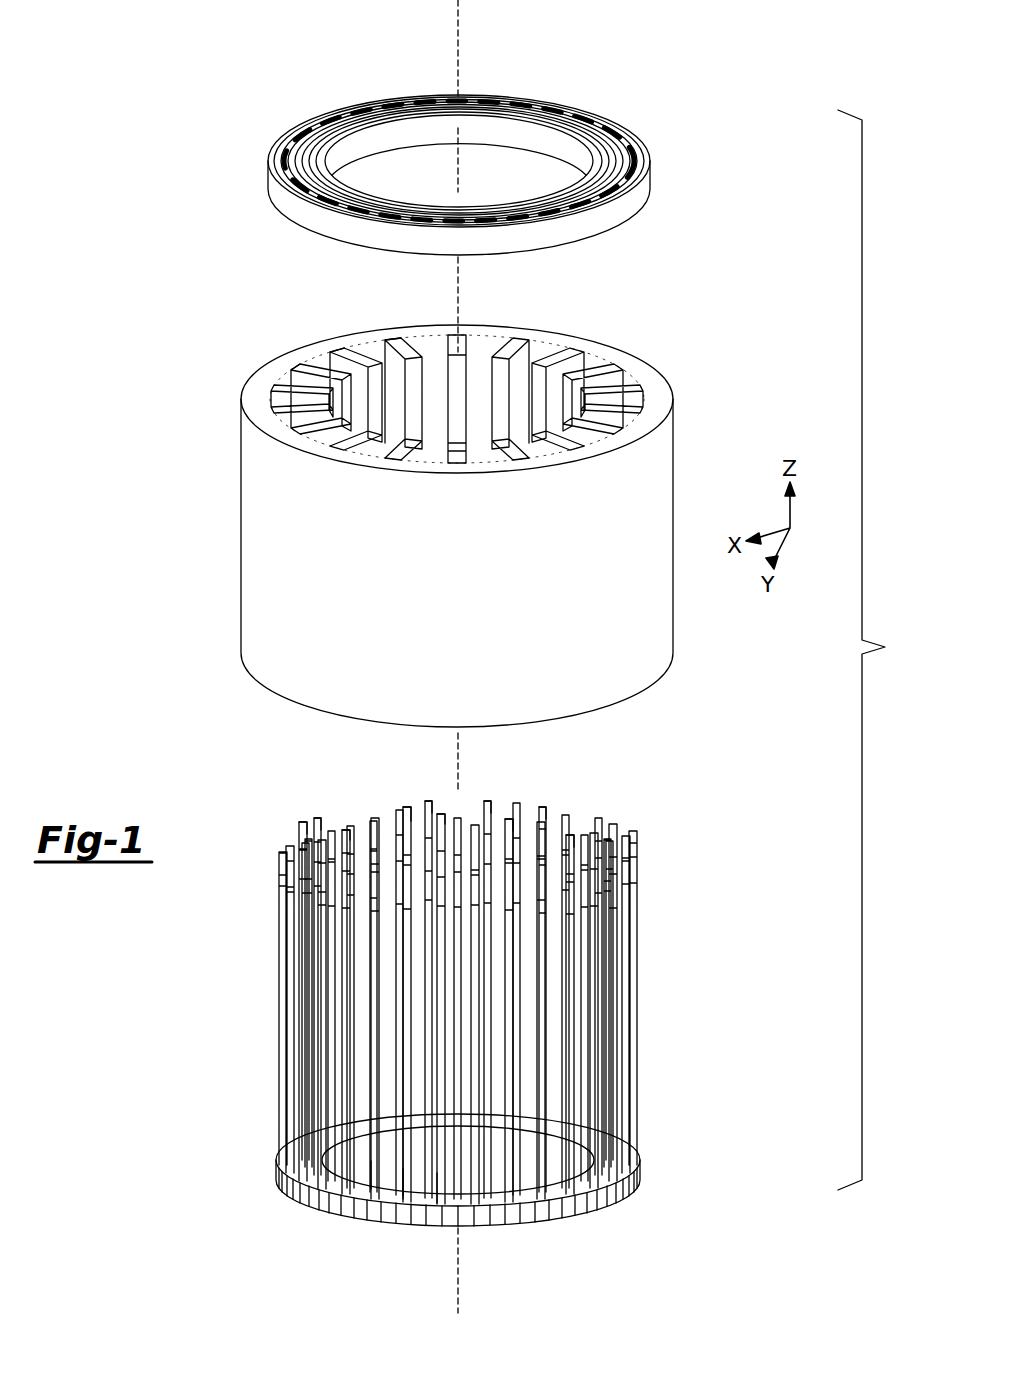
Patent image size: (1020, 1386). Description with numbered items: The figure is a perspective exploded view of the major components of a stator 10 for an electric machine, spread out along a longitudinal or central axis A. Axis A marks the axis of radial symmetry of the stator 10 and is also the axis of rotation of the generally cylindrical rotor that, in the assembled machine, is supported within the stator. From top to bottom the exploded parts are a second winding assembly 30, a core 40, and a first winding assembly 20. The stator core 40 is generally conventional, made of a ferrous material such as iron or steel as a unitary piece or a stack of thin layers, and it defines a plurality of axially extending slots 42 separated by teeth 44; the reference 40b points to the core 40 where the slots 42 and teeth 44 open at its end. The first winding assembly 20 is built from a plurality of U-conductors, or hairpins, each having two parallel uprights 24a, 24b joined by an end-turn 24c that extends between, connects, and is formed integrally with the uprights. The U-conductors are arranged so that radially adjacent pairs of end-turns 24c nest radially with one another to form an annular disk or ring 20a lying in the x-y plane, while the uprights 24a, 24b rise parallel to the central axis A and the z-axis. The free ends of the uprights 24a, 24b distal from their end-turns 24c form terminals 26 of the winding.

The central axis A is at (462, 8).
The stator 10 is at (879, 650).
The first winding assembly 20 is at (441, 1025).
The annular disk or ring 20a is at (481, 1196).
The upright 24a is at (330, 1020).
The upright 24b is at (612, 1032).
The end-turn 24c is at (390, 1215).
The terminals 26 is at (305, 832).
The second winding assembly 30 is at (580, 100).
The core 40 is at (473, 498).
The stator core end face 40b is at (650, 385).
The slots 42 is at (403, 400).
The teeth 44 is at (543, 348).